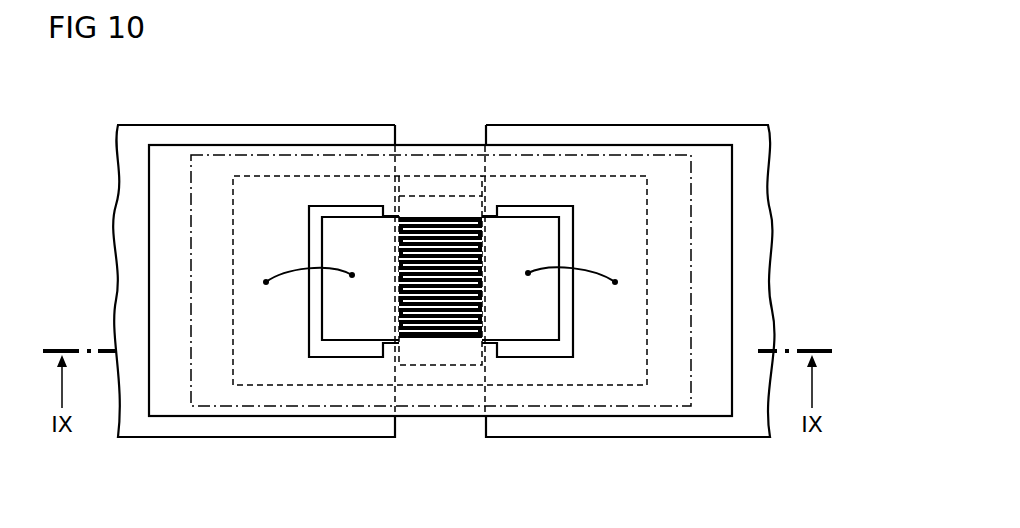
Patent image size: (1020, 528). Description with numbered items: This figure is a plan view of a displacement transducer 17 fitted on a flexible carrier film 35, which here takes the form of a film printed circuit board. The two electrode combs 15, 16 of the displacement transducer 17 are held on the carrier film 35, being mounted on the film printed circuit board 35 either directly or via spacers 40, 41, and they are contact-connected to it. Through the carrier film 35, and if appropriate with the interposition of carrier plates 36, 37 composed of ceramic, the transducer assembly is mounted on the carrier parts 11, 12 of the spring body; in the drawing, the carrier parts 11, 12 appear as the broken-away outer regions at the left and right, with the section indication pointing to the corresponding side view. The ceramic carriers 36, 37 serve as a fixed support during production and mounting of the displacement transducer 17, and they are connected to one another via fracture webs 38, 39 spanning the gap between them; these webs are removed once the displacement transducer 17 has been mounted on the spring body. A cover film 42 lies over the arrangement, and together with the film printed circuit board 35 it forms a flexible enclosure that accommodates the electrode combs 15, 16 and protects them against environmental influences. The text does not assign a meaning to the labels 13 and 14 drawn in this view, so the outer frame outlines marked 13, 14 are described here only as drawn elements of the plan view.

The carrier part 11 is at (152, 440).
The carrier part 12 is at (725, 438).
The first chip region 13 is at (170, 135).
The second chip region 14 is at (708, 130).
The electrode comb 15 is at (352, 230).
The electrode comb 16 is at (523, 228).
The displacement transducer 17 is at (430, 216).
The flexible carrier film 35 is at (412, 418).
The carrier plate 36 is at (267, 380).
The carrier plate 37 is at (607, 377).
The fracture web 38 is at (447, 380).
The fracture web 39 is at (453, 178).
The spacer 40 is at (350, 350).
The spacer 41 is at (533, 350).
The cover film 42 is at (583, 152).